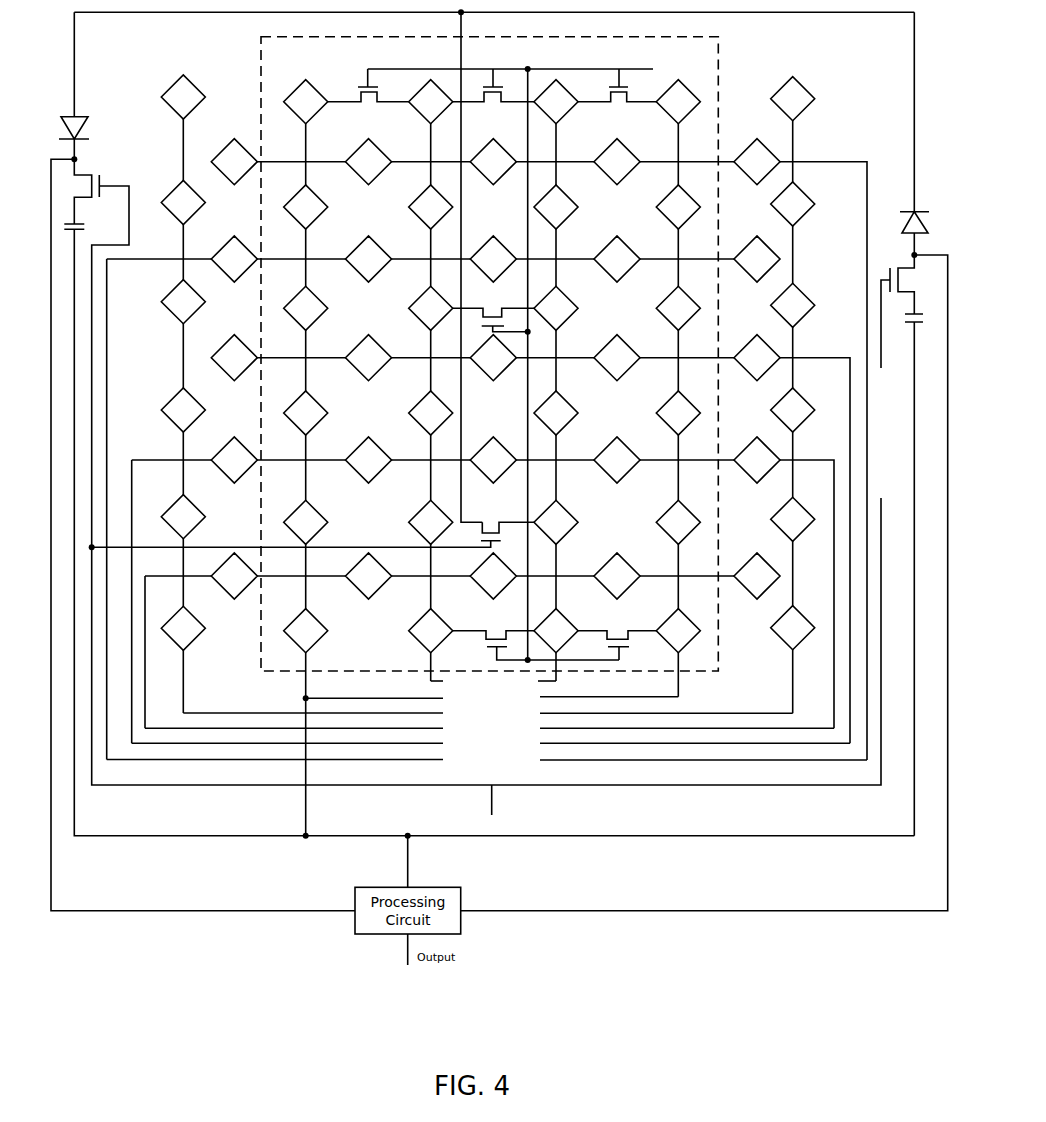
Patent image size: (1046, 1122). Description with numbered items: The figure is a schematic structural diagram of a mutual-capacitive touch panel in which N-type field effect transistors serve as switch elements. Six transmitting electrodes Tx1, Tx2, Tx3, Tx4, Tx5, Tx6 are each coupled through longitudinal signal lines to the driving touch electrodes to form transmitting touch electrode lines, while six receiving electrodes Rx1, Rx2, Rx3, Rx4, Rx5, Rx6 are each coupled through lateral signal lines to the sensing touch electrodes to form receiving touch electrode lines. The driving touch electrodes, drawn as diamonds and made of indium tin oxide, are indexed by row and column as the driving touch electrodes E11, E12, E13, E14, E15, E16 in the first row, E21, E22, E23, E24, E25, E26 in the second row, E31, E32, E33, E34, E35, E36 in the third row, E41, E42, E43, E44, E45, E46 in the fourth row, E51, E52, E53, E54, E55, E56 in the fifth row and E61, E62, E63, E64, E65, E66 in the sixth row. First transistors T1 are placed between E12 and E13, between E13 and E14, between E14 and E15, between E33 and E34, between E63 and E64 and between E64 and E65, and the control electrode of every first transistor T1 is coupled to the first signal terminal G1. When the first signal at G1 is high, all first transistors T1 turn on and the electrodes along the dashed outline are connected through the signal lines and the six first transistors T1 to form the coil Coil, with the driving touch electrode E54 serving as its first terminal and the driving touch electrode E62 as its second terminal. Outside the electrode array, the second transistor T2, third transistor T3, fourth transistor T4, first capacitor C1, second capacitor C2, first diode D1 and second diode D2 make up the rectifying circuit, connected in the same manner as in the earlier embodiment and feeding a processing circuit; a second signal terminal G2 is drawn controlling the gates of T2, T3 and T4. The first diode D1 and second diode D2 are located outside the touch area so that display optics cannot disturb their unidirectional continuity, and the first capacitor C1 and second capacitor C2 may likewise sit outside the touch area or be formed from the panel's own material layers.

The driving touch electrode E11 is at (183, 97).
The driving touch electrode E12 is at (306, 102).
The driving touch electrode E13 is at (431, 102).
The driving touch electrode E14 is at (556, 102).
The driving touch electrode E15 is at (678, 102).
The driving touch electrode E16 is at (793, 99).
The driving touch electrode E21 is at (183, 203).
The driving touch electrode E22 is at (306, 207).
The driving touch electrode E23 is at (431, 207).
The driving touch electrode E24 is at (556, 207).
The driving touch electrode E25 is at (678, 207).
The driving touch electrode E26 is at (793, 204).
The driving touch electrode E31 is at (183, 302).
The driving touch electrode E32 is at (306, 308).
The driving touch electrode E33 is at (431, 308).
The driving touch electrode E34 is at (556, 308).
The driving touch electrode E35 is at (678, 308).
The driving touch electrode E36 is at (793, 305).
The driving touch electrode E41 is at (183, 410).
The driving touch electrode E42 is at (306, 413).
The driving touch electrode E43 is at (431, 413).
The driving touch electrode E44 is at (556, 413).
The driving touch electrode E45 is at (678, 413).
The driving touch electrode E46 is at (793, 410).
The driving touch electrode E51 is at (183, 517).
The driving touch electrode E52 is at (306, 522).
The driving touch electrode E53 is at (431, 522).
The driving touch electrode E54 is at (556, 522).
The driving touch electrode E55 is at (678, 522).
The driving touch electrode E56 is at (793, 519).
The driving touch electrode E61 is at (183, 628).
The driving touch electrode E62 is at (306, 631).
The driving touch electrode E63 is at (431, 631).
The driving touch electrode E64 is at (556, 631).
The driving touch electrode E65 is at (678, 631).
The driving touch electrode E66 is at (793, 628).
The first transistor T1 is at (492, 364).
The second transistor T2 is at (313, 525).
The third transistor T3 is at (104, 178).
The fourth transistor T4 is at (914, 280).
The first capacitor C1 is at (86, 226).
The second capacitor C2 is at (924, 320).
The first diode D1 is at (85, 128).
The second diode D2 is at (923, 222).
The first signal terminal G1 is at (513, 62).
The second gate line G2 is at (502, 801).
The coil Coil is at (489, 354).
The transmitting electrode Tx1 is at (449, 681).
The transmitting electrode Tx2 is at (387, 699).
The transmitting electrode Tx3 is at (325, 713).
The transmitting electrode Tx4 is at (535, 681).
The transmitting electrode Tx5 is at (596, 697).
The transmitting electrode Tx6 is at (653, 714).
The receiving electrode Rx1 is at (306, 729).
The receiving electrode Rx2 is at (300, 744).
The receiving electrode Rx3 is at (287, 760).
The receiving electrode Rx4 is at (674, 729).
The receiving electrode Rx5 is at (682, 744).
The receiving electrode Rx6 is at (690, 760).